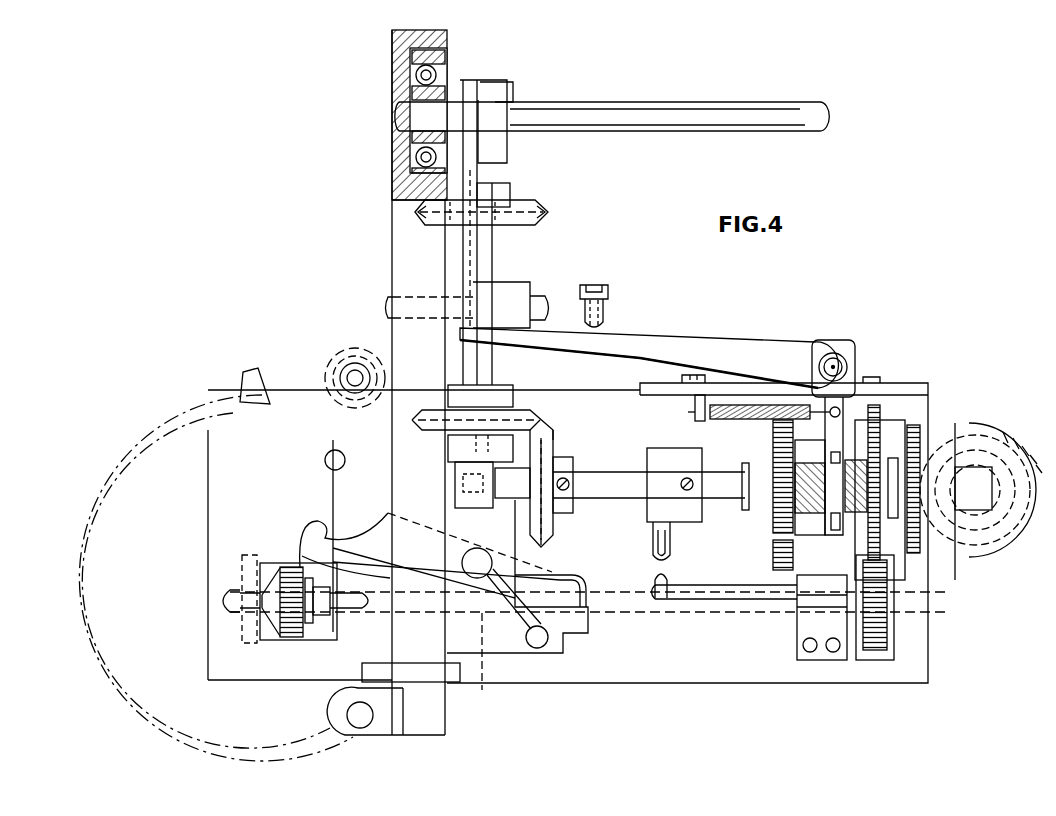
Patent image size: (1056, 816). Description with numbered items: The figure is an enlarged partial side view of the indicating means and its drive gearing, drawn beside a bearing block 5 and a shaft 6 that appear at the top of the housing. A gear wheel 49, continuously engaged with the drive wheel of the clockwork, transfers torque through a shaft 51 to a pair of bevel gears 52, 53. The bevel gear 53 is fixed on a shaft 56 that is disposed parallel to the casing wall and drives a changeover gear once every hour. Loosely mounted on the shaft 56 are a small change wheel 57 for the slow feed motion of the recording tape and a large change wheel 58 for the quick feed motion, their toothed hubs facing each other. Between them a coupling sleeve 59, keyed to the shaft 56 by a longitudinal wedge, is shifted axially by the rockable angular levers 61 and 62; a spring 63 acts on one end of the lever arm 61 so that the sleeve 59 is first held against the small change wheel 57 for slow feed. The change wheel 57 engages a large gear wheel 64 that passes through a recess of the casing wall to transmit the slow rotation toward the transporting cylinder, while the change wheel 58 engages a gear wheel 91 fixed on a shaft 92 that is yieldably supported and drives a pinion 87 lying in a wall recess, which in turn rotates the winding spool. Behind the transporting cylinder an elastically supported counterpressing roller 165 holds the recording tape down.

The ball bearing 5 is at (405, 100).
The shaft 6 is at (710, 112).
The gear wheel 49 is at (550, 212).
The shaft 51 is at (490, 263).
The bevel gear 52 is at (525, 413).
The bevel gear 53 is at (545, 452).
The shaft 56 is at (611, 500).
The small change wheel 57 is at (778, 512).
The large change wheel 58 is at (878, 528).
The coupling sleeve 59 is at (822, 607).
The angular lever 61 is at (838, 422).
The angular lever 62 is at (706, 343).
The spring 63 is at (731, 410).
The large gear wheel 64 is at (782, 568).
The pinion 87 is at (283, 565).
The gear wheel 91 is at (878, 650).
The shaft 92 is at (484, 663).
The counterpressing roller 165 is at (332, 360).